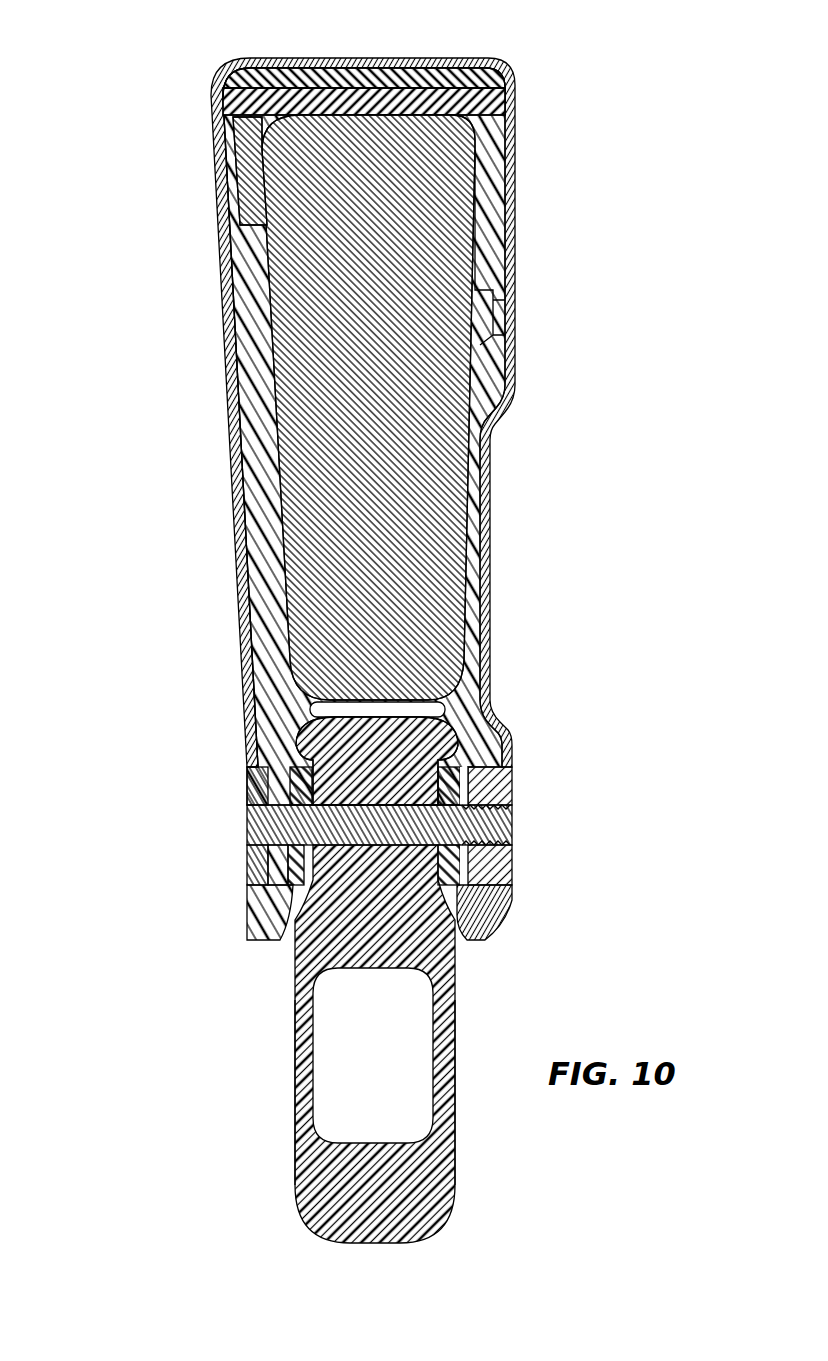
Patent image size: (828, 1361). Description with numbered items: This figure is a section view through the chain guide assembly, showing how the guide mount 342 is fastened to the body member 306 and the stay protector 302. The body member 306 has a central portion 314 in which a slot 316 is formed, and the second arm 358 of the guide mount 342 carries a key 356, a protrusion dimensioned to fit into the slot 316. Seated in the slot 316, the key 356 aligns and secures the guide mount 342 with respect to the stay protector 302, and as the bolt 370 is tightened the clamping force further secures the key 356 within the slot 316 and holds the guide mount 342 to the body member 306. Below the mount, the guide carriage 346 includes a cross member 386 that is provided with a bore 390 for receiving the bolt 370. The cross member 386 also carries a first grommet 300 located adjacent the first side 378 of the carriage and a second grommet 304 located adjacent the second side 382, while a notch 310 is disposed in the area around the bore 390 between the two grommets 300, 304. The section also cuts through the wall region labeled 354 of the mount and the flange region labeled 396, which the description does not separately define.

The first grommet 300 is at (293, 940).
The stay protector 302 is at (482, 76).
The second grommet 304 is at (455, 940).
The body member 306 is at (252, 170).
The notch 310 is at (433, 840).
The central portion 314 is at (492, 337).
The slot 316 is at (474, 282).
The guide mount 342 is at (136, 316).
The guide carriage 346 is at (200, 1060).
The left wall 354 is at (262, 413).
The key 356 is at (483, 242).
The second arm 358 is at (488, 512).
The bolt 370 is at (257, 818).
The first side 378 is at (296, 1110).
The second side 382 is at (455, 1108).
The cross member 386 is at (413, 737).
The bore 390 is at (378, 808).
The right flange 396 is at (503, 786).